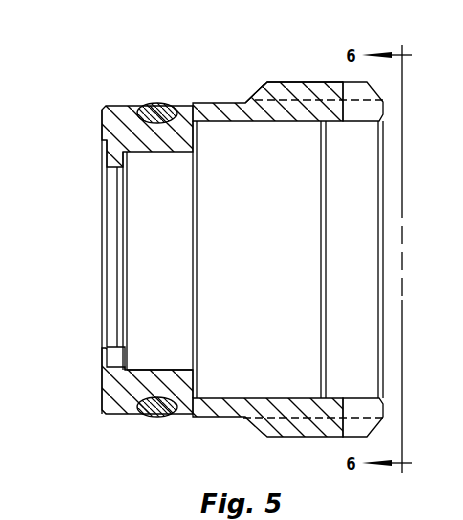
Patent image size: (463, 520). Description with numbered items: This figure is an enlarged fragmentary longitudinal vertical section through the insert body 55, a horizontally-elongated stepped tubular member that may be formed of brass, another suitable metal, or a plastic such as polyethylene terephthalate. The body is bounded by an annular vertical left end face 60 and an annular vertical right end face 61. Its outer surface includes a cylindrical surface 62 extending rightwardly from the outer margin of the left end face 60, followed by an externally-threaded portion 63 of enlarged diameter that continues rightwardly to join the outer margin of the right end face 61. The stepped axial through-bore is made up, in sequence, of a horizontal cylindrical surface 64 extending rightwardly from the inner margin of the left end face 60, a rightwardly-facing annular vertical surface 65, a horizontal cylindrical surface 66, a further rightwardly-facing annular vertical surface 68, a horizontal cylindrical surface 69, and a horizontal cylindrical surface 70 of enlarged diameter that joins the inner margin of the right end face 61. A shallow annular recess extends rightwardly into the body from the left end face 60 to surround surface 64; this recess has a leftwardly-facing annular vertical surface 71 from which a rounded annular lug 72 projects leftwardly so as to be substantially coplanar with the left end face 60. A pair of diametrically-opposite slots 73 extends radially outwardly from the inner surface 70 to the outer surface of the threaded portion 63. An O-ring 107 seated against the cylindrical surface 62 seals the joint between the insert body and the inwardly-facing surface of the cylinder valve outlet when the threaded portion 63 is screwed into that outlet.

The insert body 55 is at (222, 82).
The left end face 60 is at (100, 138).
The right end face 61 is at (387, 107).
The cylindrical surface 62 is at (112, 102).
The externally-threaded portion 63 is at (303, 87).
The horizontal cylindrical surface 64 is at (103, 342).
The rightwardly-facing annular vertical surface 65 is at (122, 164).
The horizontal cylindrical surface 66 is at (189, 321).
The rightwardly-facing annular vertical surface 68 is at (198, 145).
The horizontal cylindrical surface 69 is at (232, 398).
The horizontal cylindrical surface of enlarged diameter 70 is at (353, 122).
The leftwardly-facing annular vertical surface 71 is at (100, 372).
The rounded annular lug 72 is at (100, 168).
The slots 73 is at (358, 110).
The O-ring 107 is at (157, 418).